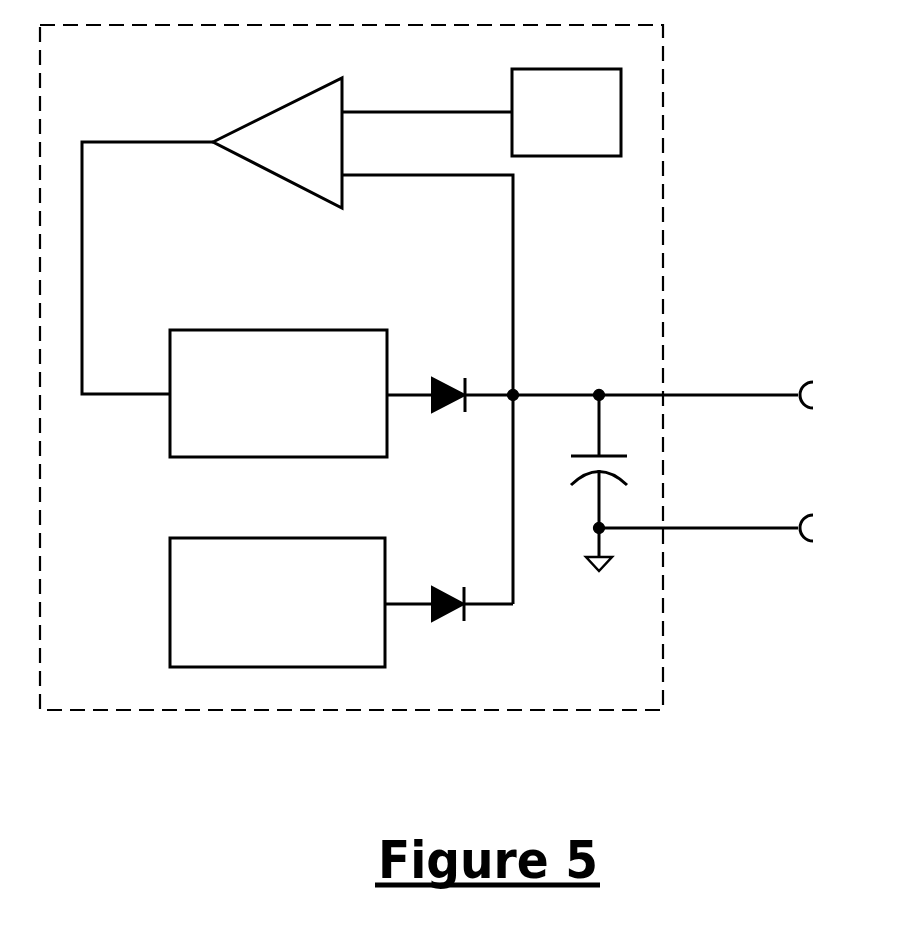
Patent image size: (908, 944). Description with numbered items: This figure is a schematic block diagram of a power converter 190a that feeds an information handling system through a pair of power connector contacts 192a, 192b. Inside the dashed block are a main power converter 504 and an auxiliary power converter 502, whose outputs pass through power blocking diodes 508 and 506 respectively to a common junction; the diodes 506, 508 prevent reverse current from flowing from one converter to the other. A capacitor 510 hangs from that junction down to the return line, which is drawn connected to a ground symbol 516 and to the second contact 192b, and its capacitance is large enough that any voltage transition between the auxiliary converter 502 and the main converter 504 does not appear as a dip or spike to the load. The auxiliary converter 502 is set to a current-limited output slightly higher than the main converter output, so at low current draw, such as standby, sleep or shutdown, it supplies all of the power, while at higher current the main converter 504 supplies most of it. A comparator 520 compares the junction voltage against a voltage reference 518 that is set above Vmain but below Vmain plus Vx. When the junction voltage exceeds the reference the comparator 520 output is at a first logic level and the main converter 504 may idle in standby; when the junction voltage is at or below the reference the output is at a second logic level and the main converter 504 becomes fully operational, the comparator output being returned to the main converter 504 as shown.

The power converter 190a is at (401, 367).
The power connector contact 192a is at (813, 383).
The power connector contact 192b is at (813, 516).
The auxiliary power converter 502 is at (360, 537).
The main power converter 504 is at (362, 330).
The power blocking diode 506 is at (449, 591).
The power blocking diode 508 is at (450, 383).
The capacitor 510 is at (616, 454).
The ground 516 is at (605, 573).
The voltage reference 518 is at (580, 157).
The comparator 520 is at (267, 172).